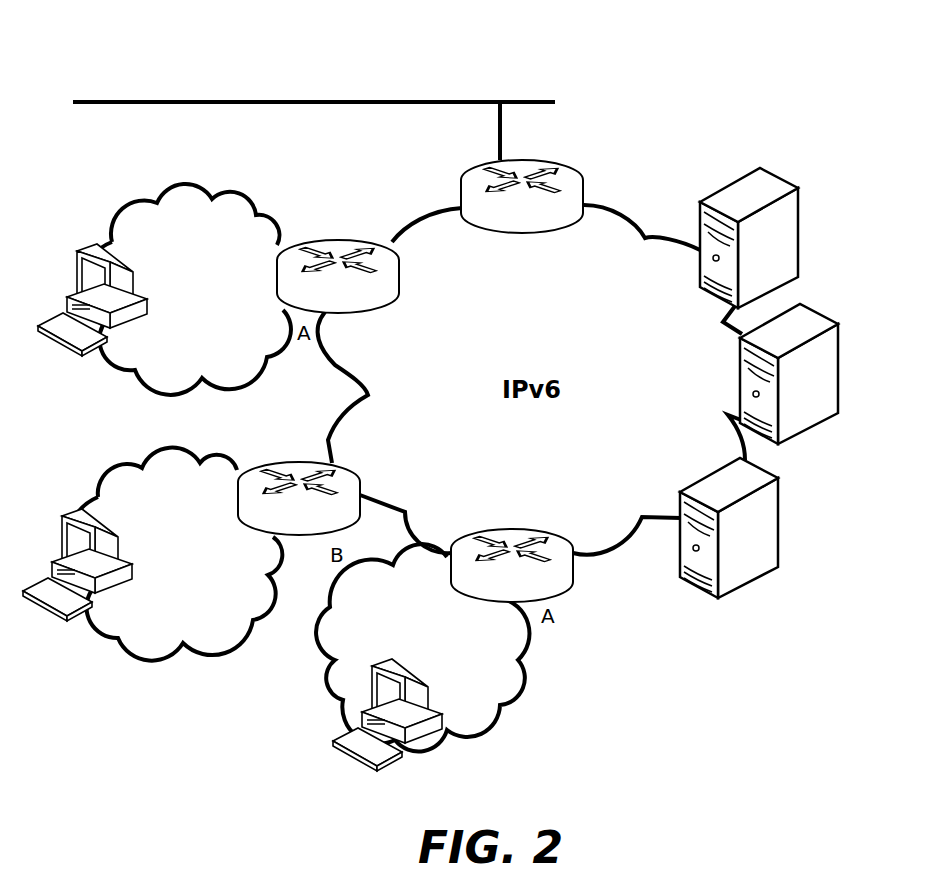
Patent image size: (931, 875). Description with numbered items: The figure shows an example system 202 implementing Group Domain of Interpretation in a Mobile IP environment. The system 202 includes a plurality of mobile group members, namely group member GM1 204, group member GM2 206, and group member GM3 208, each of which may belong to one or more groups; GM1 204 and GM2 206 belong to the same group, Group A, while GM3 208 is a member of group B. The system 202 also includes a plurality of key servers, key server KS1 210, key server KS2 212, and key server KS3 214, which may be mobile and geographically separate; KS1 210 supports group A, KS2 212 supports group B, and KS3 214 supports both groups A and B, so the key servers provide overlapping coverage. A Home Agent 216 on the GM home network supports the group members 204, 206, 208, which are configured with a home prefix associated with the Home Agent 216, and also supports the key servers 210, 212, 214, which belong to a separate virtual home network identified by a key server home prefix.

The system 202 is at (696, 91).
The group member 1 (GM1) 204 is at (324, 240).
The group member 2 (GM2) 206 is at (574, 586).
The group member 3 (GM3) 208 is at (275, 462).
The key server 1 (KS1) 210 is at (797, 228).
The key server 2 (KS2) 212 is at (812, 424).
The key server 3 (KS3) 214 is at (746, 580).
The Home Agent 216 is at (527, 160).